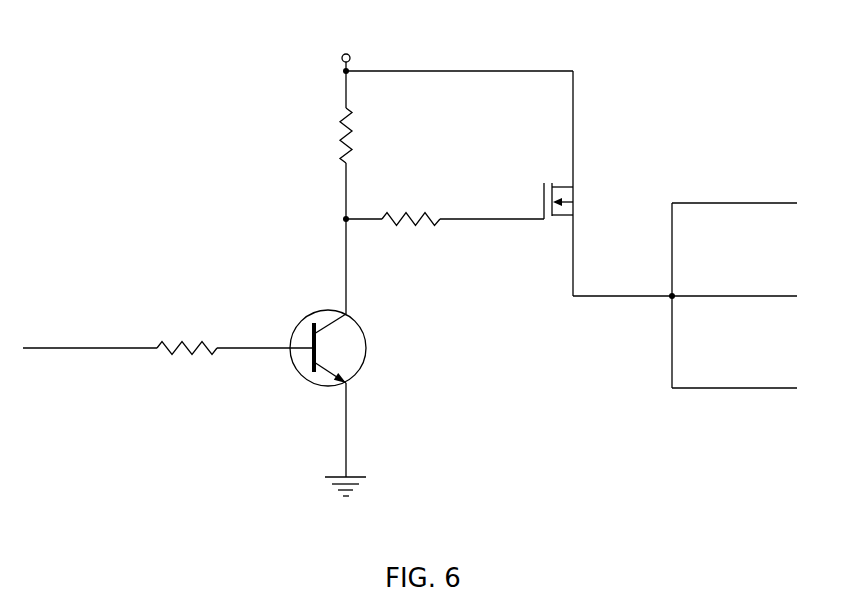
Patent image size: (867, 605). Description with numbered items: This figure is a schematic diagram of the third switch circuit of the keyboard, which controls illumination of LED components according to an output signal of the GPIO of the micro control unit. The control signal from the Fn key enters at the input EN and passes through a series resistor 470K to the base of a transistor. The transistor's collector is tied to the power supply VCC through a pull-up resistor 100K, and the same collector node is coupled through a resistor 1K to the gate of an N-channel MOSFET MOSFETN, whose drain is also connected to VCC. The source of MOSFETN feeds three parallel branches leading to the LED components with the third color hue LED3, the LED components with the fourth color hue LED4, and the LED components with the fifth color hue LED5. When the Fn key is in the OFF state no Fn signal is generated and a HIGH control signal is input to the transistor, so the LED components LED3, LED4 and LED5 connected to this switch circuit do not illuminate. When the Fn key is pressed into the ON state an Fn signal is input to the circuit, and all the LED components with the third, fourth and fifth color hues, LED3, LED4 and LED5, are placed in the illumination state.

The power supply VCC is at (332, 53).
The 100K resistor 100K is at (367, 135).
The 1K resistor 1K is at (411, 230).
The N-channel MOSFET MOSFETN is at (601, 201).
The LED components with the third color hue LED3 is at (734, 194).
The LED components with the fourth color hue LED4 is at (770, 286).
The LED components with the fifth color hue LED5 is at (734, 379).
The Fn signal input EN is at (90, 342).
The 470K resistor 470K is at (187, 356).